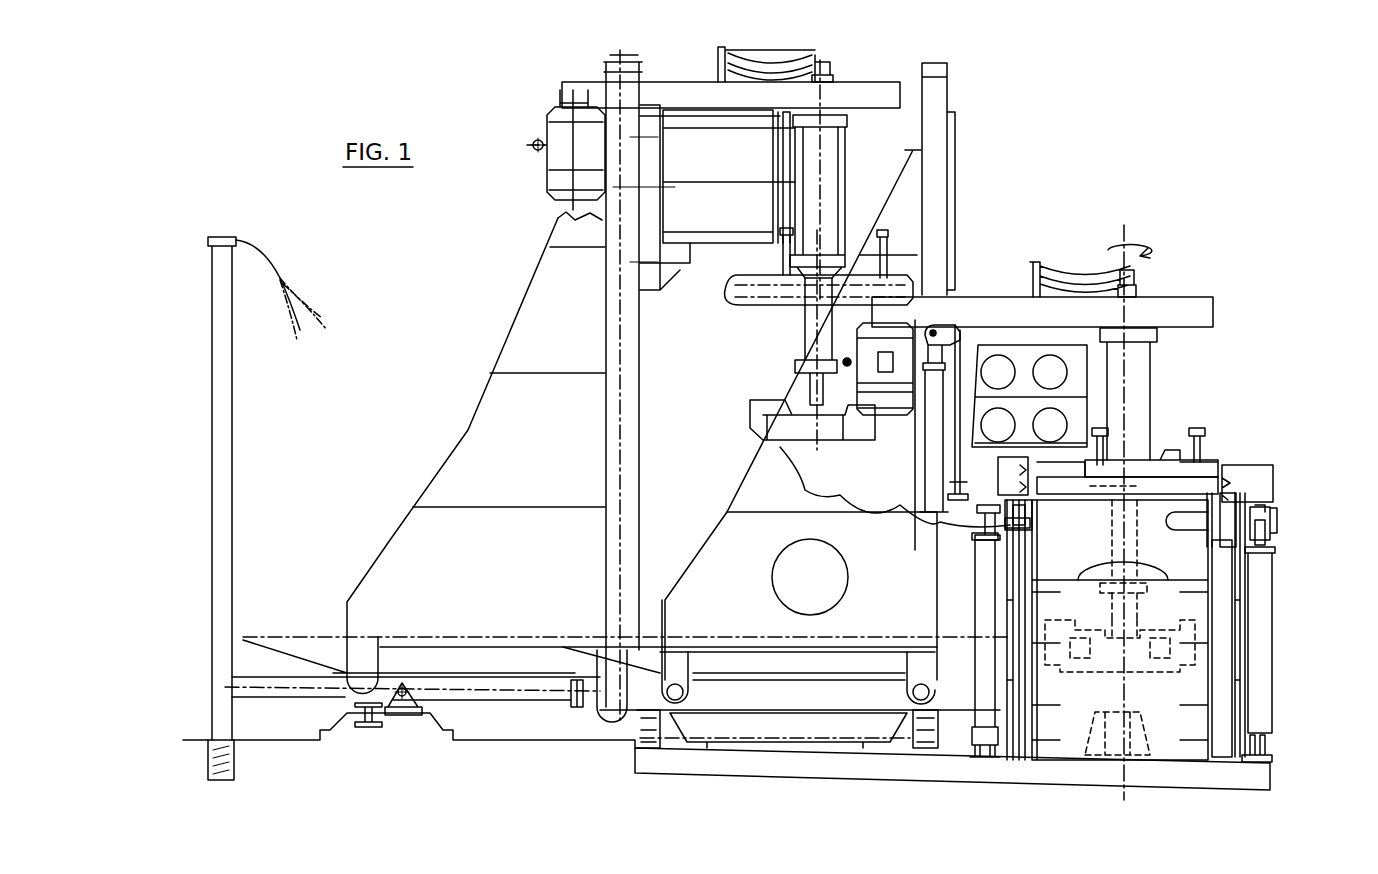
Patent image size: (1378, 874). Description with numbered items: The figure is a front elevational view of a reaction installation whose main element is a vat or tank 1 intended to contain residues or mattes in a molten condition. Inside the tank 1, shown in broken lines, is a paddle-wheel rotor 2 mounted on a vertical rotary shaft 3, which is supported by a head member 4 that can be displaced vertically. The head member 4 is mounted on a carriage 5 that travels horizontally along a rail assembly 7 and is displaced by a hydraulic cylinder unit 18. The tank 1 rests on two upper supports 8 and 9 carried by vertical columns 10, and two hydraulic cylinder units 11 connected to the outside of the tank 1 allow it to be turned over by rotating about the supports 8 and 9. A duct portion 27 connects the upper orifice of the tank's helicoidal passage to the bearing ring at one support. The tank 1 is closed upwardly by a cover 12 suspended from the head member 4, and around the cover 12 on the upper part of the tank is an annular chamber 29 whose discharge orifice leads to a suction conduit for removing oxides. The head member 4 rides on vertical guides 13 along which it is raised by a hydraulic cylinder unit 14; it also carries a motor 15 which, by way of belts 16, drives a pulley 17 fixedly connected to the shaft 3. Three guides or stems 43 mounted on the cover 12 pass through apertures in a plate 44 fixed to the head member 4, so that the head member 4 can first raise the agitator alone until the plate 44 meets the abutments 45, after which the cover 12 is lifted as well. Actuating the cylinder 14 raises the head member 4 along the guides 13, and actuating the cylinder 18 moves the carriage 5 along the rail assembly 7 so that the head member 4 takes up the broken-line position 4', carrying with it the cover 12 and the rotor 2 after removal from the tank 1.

The vat or tank 1 is at (1192, 685).
The rotor 2 is at (1145, 642).
The vertical rotary shaft 3 is at (1138, 540).
The head member 4 is at (1064, 354).
The displaced position of the head member 4' is at (788, 161).
The carriage 5 is at (765, 487).
The rail assembly 7 is at (625, 708).
The upper support 8 is at (1000, 497).
The upper support 9 is at (1228, 505).
The vertical columns 10 is at (1223, 735).
The hydraulic cylinder units 11 is at (1262, 598).
The cover 12 is at (1207, 478).
The vertical guides 13 is at (945, 92).
The hydraulic cylinder unit 14 is at (930, 455).
The motor 15 is at (863, 395).
The belts 16 is at (963, 300).
The pulley 17 is at (1170, 300).
The hydraulic cylinder unit 18 is at (525, 695).
The duct portion 27 is at (1185, 522).
The annular chamber 29 is at (1245, 465).
The guides or stems 43 is at (1100, 430).
The plate 44 is at (1152, 458).
The abutments 45 is at (1198, 433).